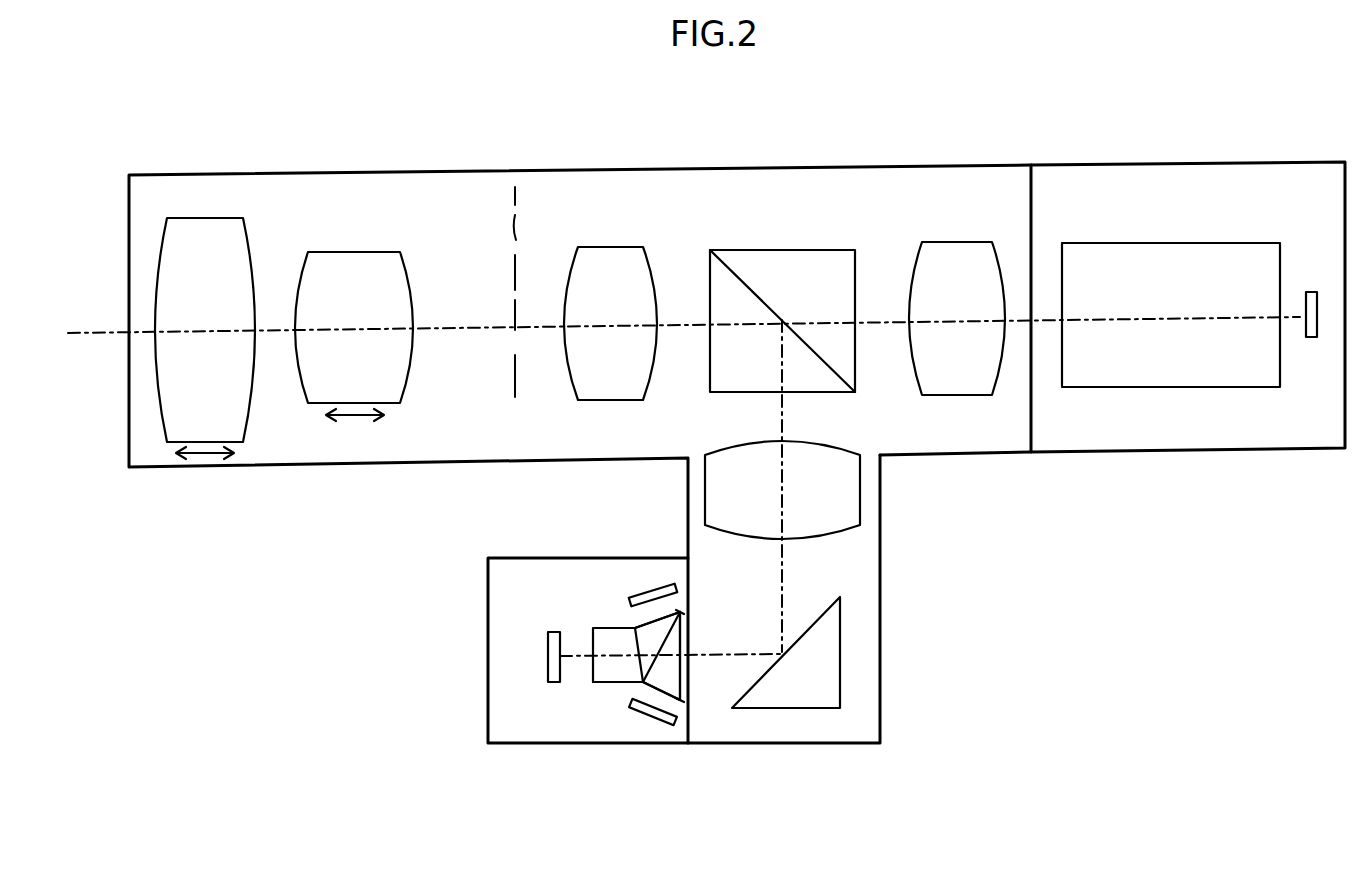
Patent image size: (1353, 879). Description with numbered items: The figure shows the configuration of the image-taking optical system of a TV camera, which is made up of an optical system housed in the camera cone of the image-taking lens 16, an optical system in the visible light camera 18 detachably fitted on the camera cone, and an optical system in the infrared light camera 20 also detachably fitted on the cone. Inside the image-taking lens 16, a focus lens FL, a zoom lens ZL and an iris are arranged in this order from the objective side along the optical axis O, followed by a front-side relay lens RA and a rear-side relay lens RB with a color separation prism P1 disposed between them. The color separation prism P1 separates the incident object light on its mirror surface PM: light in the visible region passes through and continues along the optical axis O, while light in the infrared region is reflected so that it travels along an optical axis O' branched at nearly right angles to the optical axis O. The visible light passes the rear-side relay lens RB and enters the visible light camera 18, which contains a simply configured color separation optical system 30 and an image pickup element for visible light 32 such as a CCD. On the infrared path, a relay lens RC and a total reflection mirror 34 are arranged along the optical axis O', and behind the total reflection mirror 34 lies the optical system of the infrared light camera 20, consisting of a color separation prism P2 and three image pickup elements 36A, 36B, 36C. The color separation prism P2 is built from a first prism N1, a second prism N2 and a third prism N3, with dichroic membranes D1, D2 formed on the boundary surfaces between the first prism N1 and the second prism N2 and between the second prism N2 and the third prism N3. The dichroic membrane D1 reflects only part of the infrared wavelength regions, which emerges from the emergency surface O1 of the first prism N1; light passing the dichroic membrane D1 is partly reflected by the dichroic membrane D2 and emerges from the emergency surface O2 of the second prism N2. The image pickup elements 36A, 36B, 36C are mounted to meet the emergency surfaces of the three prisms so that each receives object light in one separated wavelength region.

The image-taking lens 16 is at (497, 170).
The visible light camera 18 is at (1193, 162).
The infrared light camera 20 is at (592, 745).
The color separation optical system 30 is at (1170, 243).
The image pickup element for visible light 32 is at (1311, 292).
The total reflection mirror 34 is at (840, 652).
The image pickup element 36A is at (672, 728).
The image pickup element 36B is at (650, 592).
The image pickup element 36C is at (548, 650).
The focus lens FL is at (210, 218).
The zoom lens ZL is at (355, 252).
The front-side relay lens RA is at (612, 247).
The rear-side relay lens RB is at (960, 242).
The relay lens RC is at (860, 487).
The mirror surface PM is at (712, 262).
The color separation prism P1 is at (782, 250).
The color separation prism P2 is at (608, 628).
The dichroic membrane D1 is at (684, 630).
The dichroic membrane D2 is at (640, 685).
The first prism N1 is at (682, 690).
The second prism N2 is at (640, 628).
The third prism N3 is at (605, 683).
The optical axis O is at (377, 301).
The optical axis O' is at (809, 411).
The emergency surface O1 is at (683, 700).
The emergency surface O2 is at (682, 612).